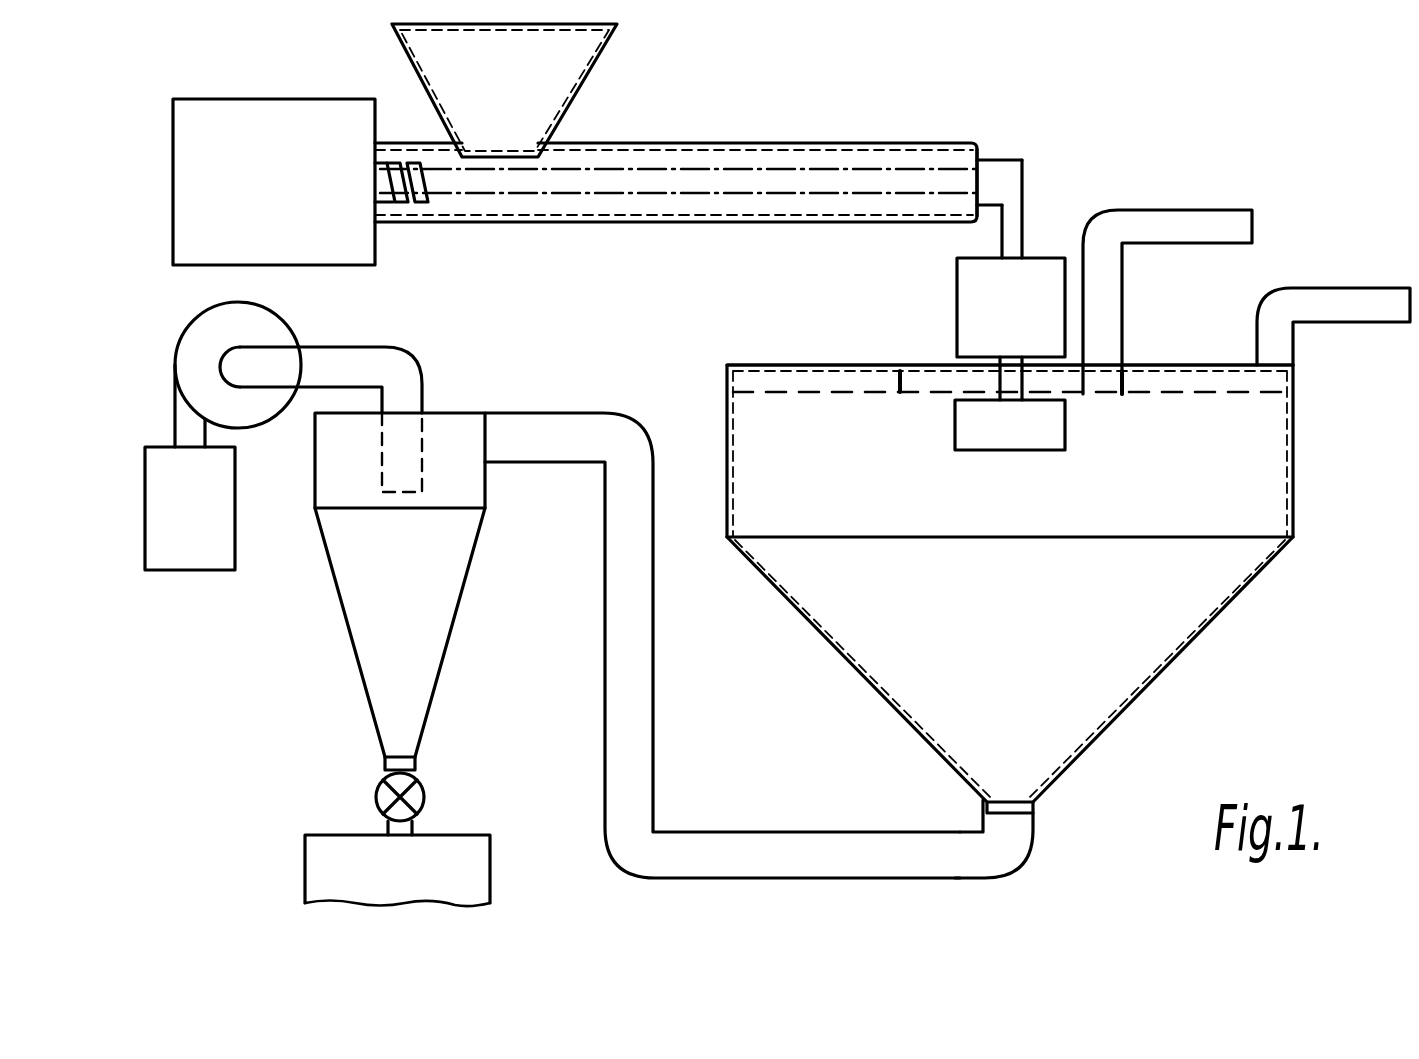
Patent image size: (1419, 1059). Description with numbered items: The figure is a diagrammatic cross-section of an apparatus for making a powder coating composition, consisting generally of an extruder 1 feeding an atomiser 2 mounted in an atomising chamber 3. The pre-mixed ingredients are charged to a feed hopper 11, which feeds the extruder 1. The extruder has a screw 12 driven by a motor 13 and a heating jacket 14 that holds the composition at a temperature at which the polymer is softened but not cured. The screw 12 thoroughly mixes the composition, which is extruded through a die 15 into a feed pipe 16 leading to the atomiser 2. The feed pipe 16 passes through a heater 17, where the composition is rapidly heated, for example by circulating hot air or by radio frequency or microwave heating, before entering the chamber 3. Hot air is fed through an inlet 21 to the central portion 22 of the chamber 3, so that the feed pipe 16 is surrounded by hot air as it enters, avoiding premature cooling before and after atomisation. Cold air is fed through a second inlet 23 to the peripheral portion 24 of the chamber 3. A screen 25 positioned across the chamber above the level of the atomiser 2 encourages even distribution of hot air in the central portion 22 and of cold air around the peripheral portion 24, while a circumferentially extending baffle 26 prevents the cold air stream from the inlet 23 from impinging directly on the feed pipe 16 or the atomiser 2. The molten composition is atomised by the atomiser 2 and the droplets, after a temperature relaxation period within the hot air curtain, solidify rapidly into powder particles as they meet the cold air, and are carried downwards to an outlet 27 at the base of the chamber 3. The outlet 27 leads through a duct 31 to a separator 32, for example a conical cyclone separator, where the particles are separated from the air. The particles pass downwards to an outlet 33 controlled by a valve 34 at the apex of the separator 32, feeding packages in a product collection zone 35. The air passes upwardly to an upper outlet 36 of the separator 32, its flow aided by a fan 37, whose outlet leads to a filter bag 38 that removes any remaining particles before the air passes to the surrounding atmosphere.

The extruder 1 is at (716, 138).
The atomiser 2 is at (1074, 444).
The atomising chamber 3 is at (1298, 481).
The feed hopper 11 is at (590, 75).
The screw 12 is at (572, 195).
The motor 13 is at (320, 110).
The heating jacket 14 is at (750, 213).
The die 15 is at (985, 143).
The feed pipe 16 is at (1020, 215).
The heater 17 is at (970, 306).
The inlet 21 is at (1218, 213).
The central portion 22 is at (962, 392).
The inlet 23 is at (1370, 300).
The peripheral portion 24 is at (768, 382).
The screen 25 is at (845, 398).
The circumferentially extending baffle 26 is at (895, 395).
The outlet 27 is at (1015, 828).
The duct 31 is at (632, 705).
The separator 32 is at (460, 637).
The outlet 33 is at (392, 762).
The valve 34 is at (408, 796).
The product collection zone 35 is at (475, 866).
The upper outlet 36 is at (400, 385).
The fan 37 is at (195, 347).
The filter bag 38 is at (170, 508).